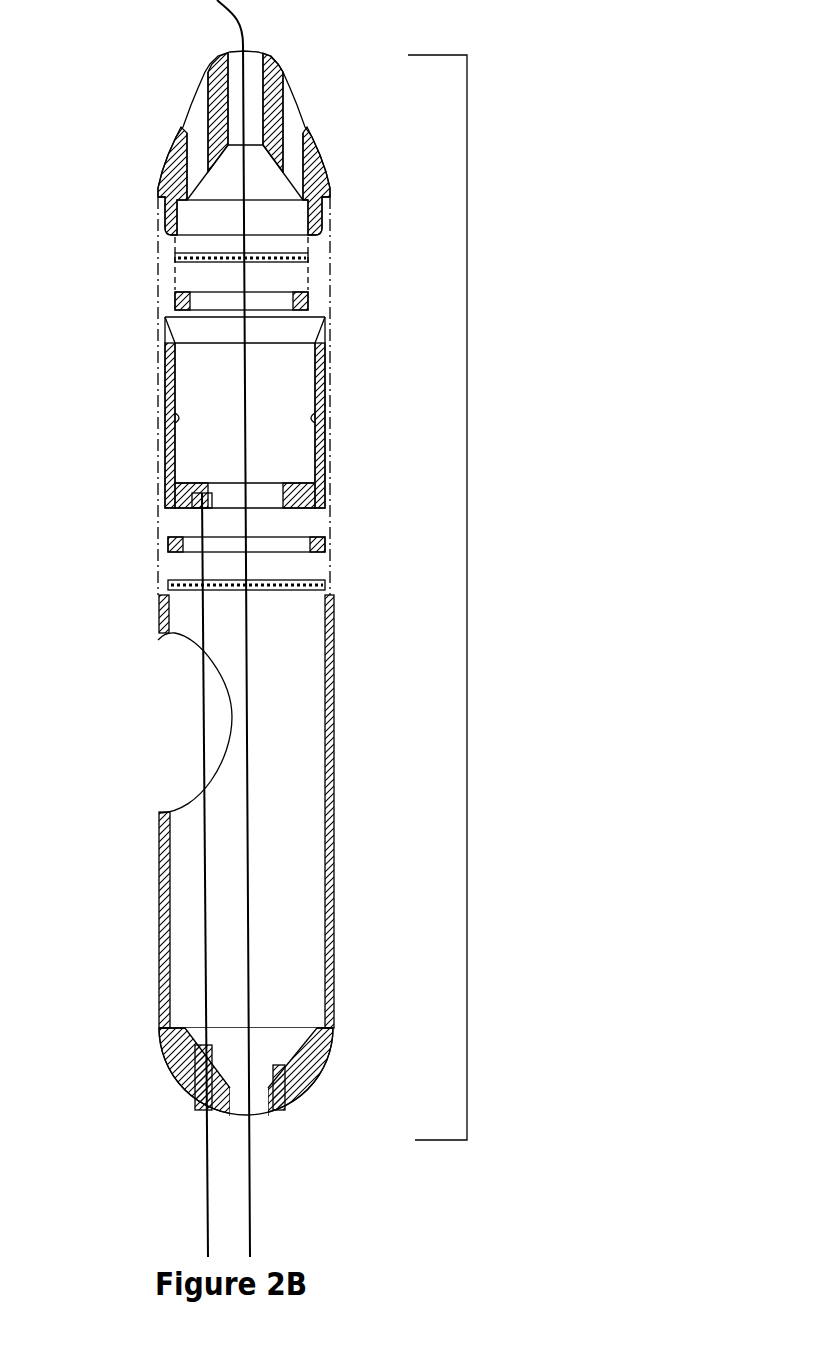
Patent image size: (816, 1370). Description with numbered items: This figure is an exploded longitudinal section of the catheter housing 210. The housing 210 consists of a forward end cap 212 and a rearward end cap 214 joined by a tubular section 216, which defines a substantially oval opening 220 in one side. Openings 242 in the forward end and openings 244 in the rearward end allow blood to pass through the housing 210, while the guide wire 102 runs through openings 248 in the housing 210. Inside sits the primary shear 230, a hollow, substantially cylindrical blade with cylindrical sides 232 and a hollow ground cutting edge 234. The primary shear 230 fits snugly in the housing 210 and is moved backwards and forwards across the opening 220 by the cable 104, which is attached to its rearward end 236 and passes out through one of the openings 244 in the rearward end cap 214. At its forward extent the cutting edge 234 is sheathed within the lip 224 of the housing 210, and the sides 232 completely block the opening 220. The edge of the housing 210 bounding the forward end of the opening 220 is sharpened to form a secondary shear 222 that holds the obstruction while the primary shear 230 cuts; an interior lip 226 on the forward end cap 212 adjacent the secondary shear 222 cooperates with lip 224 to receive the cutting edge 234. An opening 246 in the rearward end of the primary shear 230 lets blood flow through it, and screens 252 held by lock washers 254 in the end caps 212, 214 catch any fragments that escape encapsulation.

The guide wire 102 is at (253, 1213).
The cable 104 is at (203, 1190).
The housing 210 is at (471, 597).
The forward end cap 212 is at (277, 68).
The rearward end cap 214 is at (170, 1070).
The tubular section 216 is at (334, 725).
The oval opening 220 is at (188, 727).
The secondary shear 222 is at (165, 635).
The lip 224 is at (158, 614).
The interior lip 226 is at (167, 217).
The primary shear 230 is at (165, 367).
The sides 232 is at (165, 423).
The cutting edge 234 is at (323, 320).
The rearward end 236 is at (325, 492).
The openings 242 is at (202, 115).
The openings 244 is at (200, 1107).
The opening 246 is at (265, 500).
The openings 248 is at (237, 58).
The screens 252 is at (308, 255).
The lock washers 254 is at (308, 300).